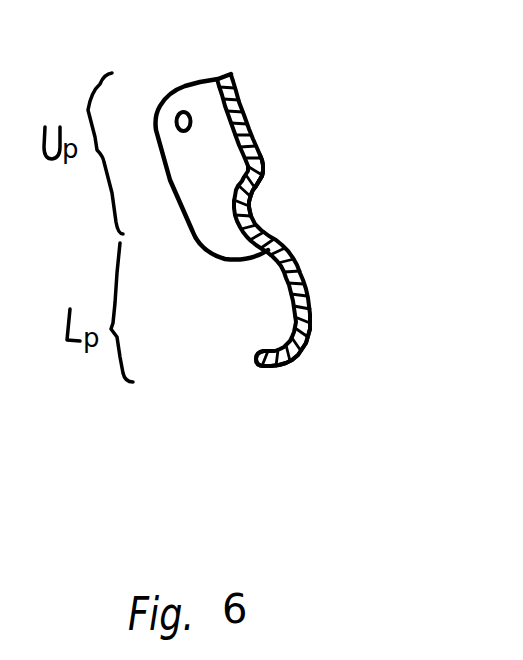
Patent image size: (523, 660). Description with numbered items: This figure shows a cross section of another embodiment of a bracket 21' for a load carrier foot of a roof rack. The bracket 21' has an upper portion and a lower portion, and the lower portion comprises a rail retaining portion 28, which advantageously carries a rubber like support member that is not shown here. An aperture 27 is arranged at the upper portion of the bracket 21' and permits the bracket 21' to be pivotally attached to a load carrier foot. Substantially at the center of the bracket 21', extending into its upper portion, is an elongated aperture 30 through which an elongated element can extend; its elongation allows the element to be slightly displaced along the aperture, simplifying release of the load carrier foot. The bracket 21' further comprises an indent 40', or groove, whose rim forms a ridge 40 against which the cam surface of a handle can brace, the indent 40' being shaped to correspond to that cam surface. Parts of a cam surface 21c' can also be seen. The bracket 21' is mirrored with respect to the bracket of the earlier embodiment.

The bracket 21' is at (253, 185).
The aperture 27 is at (184, 111).
The elongated aperture 30 is at (266, 172).
The ridge 40 is at (322, 213).
The cam surface 21c' is at (365, 231).
The indent 40' is at (323, 262).
The rail retaining portion 28 is at (306, 344).